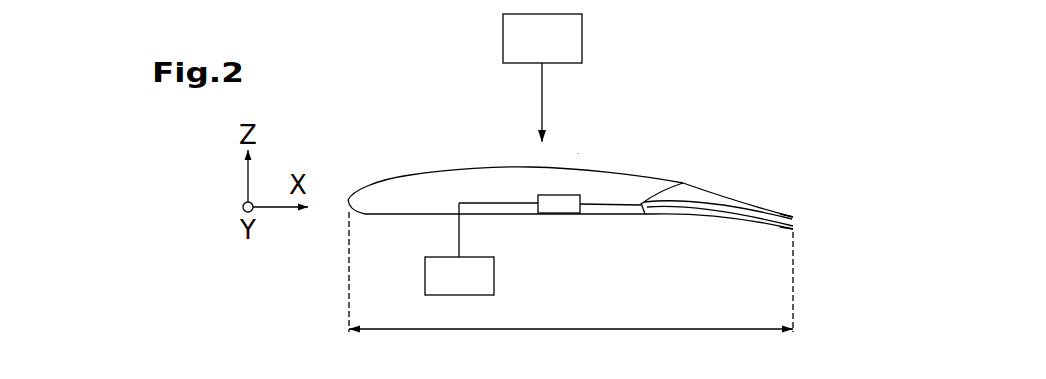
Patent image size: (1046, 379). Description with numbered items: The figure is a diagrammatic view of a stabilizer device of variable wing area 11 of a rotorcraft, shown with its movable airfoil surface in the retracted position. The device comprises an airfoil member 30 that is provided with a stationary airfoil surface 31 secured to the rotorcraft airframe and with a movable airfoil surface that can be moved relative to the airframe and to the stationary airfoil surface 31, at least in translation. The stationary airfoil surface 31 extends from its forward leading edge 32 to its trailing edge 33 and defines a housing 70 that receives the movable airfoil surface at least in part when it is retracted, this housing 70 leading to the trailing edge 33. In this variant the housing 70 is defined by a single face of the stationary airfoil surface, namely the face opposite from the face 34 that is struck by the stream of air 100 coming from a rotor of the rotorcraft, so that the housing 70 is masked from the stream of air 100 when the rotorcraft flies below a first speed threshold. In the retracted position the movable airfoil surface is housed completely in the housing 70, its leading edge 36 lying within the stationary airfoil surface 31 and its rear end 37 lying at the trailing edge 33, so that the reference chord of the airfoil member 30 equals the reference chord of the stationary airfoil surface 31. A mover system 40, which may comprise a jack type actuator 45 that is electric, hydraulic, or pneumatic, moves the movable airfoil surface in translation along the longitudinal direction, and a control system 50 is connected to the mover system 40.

The stream of air 100 is at (543, 105).
The stabilizer device of variable wing area 11 is at (578, 153).
The airfoil member 30 is at (596, 192).
The stationary airfoil surface 31 is at (517, 167).
The leading edge 32 is at (348, 200).
The trailing edge 33 is at (793, 216).
The face 34 is at (648, 173).
The leading edge 36 is at (647, 213).
The trailing edge lower end 37 is at (793, 228).
The housing 70 is at (757, 210).
The mover system 40 is at (533, 256).
The jack type actuator 45 is at (567, 205).
The control system 50 is at (446, 289).